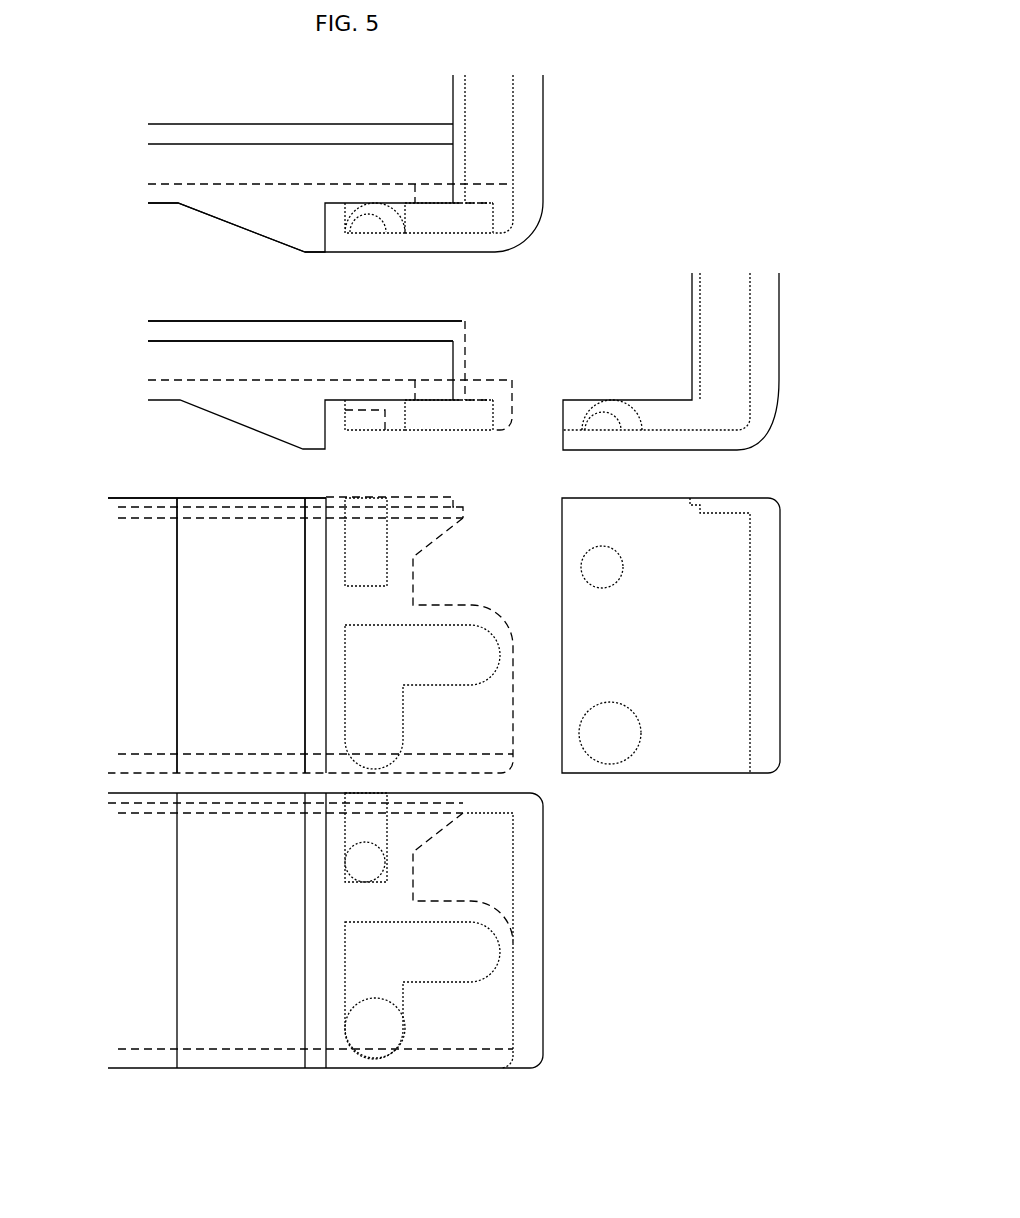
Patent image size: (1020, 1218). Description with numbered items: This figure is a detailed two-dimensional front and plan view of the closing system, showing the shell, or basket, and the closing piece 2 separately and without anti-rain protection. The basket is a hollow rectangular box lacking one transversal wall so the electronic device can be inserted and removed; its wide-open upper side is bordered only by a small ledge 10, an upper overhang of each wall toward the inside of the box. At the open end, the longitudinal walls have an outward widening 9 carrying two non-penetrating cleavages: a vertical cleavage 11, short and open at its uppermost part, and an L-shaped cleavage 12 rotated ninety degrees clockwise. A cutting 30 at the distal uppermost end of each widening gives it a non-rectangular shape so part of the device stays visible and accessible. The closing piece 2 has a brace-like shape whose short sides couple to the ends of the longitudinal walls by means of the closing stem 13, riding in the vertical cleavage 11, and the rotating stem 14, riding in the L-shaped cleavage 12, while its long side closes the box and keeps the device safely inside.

The closing piece 2 is at (543, 120).
The outward widening 9 is at (243, 222).
The ledge 10 is at (145, 362).
The vertical cleavage 11 is at (362, 532).
The L-shaped cleavage 12 is at (400, 707).
The closing stem 13 is at (603, 556).
The rotating stem 14 is at (622, 710).
The cutting 30 is at (435, 565).